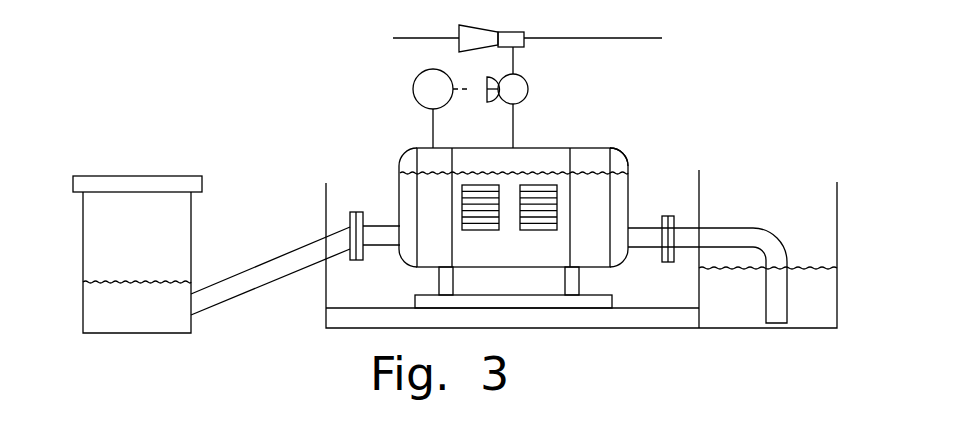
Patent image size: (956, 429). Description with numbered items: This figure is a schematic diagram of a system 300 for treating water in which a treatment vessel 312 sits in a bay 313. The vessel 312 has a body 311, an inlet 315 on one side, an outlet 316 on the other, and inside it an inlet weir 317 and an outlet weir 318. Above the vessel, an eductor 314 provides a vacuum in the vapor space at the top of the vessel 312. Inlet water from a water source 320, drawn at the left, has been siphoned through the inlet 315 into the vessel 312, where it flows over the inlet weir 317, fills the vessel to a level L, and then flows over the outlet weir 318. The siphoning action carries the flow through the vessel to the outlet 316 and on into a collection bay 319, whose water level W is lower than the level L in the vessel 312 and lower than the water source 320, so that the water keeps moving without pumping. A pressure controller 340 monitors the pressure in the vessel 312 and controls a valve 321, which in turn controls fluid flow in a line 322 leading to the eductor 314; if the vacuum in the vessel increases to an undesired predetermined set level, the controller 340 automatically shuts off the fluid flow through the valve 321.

The system 300 is at (288, 113).
The body 311 is at (522, 197).
The treatment vessel 312 is at (625, 158).
The bay 313 is at (326, 205).
The eductor 314 is at (526, 32).
The inlet 315 is at (398, 247).
The outlet 316 is at (628, 248).
The inlet weir 317 is at (448, 243).
The outlet weir 318 is at (570, 227).
The collection bay 319 is at (699, 187).
The water source 320 is at (191, 258).
The valve 321 is at (528, 89).
The line 322 is at (515, 138).
The pressure controller 340 is at (413, 89).